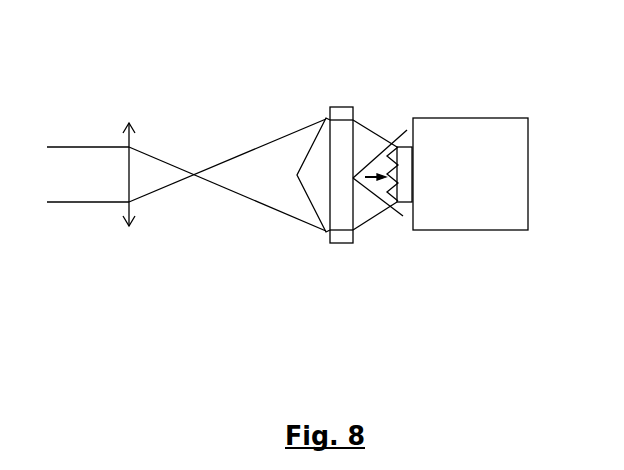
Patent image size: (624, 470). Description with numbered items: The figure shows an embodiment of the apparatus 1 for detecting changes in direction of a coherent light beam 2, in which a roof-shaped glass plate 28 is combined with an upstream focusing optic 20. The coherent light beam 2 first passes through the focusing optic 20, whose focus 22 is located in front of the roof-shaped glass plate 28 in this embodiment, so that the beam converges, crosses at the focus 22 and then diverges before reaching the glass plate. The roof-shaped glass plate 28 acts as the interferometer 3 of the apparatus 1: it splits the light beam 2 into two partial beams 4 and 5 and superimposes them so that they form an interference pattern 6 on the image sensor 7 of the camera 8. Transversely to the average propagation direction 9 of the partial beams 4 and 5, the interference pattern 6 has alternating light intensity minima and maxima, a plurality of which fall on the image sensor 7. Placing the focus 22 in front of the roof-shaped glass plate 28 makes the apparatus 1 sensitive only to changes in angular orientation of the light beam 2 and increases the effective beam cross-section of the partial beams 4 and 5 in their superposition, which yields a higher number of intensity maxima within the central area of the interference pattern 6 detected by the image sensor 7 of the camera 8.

The apparatus 1 is at (302, 167).
The coherent light beam 2 is at (62, 134).
The interferometer 3 is at (285, 247).
The partial beam 4 is at (380, 119).
The partial beam 5 is at (367, 235).
The interference pattern 6 is at (382, 200).
The image sensor 7 is at (406, 218).
The camera 8 is at (453, 118).
The average propagation direction 9 is at (367, 173).
The focusing optic 20 is at (128, 241).
The focus 22 is at (191, 136).
The roof-shaped glass plate 28 is at (334, 261).